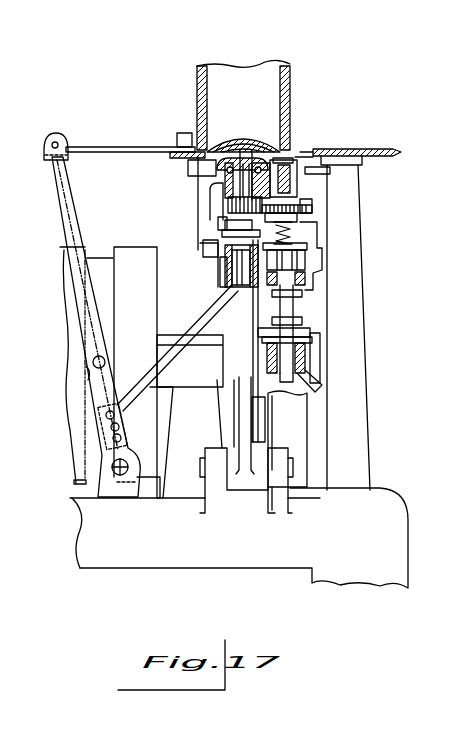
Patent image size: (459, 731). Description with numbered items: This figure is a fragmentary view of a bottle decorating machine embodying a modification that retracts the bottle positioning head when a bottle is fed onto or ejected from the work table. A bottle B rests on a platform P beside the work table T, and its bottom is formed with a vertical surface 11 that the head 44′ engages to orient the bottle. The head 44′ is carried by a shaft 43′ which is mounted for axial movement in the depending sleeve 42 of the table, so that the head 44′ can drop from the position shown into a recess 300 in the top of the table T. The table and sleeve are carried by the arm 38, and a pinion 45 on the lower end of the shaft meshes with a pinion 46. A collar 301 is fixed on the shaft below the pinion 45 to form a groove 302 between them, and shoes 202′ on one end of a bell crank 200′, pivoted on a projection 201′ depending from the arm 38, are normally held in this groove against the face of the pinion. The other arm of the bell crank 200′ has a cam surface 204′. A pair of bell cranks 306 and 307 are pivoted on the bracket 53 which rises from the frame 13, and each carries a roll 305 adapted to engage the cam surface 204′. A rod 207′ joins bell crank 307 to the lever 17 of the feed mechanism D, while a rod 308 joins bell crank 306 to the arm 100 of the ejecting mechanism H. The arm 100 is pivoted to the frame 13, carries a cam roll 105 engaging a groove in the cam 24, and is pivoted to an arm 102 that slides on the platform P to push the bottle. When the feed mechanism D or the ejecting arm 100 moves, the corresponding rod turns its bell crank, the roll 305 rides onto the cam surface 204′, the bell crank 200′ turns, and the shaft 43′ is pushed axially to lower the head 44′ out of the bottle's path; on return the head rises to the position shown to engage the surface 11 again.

The bottle B is at (232, 72).
The bottle ejecting mechanism H is at (79, 138).
The arm 102 is at (120, 146).
The recess 300 is at (243, 146).
The head 44′ is at (245, 148).
The vertical surface 11 is at (258, 150).
The work table T is at (290, 150).
The platform P is at (352, 146).
The shaft 43′ is at (300, 153).
The arm 38 is at (188, 167).
The projection 201′ is at (210, 190).
The pinion 45 is at (198, 200).
The shoes 202′ is at (228, 205).
The groove 302 is at (218, 220).
The collar 301 is at (225, 226).
The bell crank 200′ is at (203, 250).
The roll 305 is at (225, 258).
The cam surface 204′ is at (236, 262).
The bell crank 306 is at (228, 272).
The bell crank 307 is at (248, 297).
The rod 308 is at (180, 330).
The arm 100 is at (58, 204).
The cam 24 is at (67, 310).
The cam roll 105 is at (88, 372).
The lever 17 is at (239, 432).
The feed mechanism D is at (247, 486).
The frame 13 is at (292, 552).
The sleeve 42 is at (330, 172).
The pinion 46 is at (313, 208).
The rod 207′ is at (250, 314).
The bracket 53 is at (294, 418).